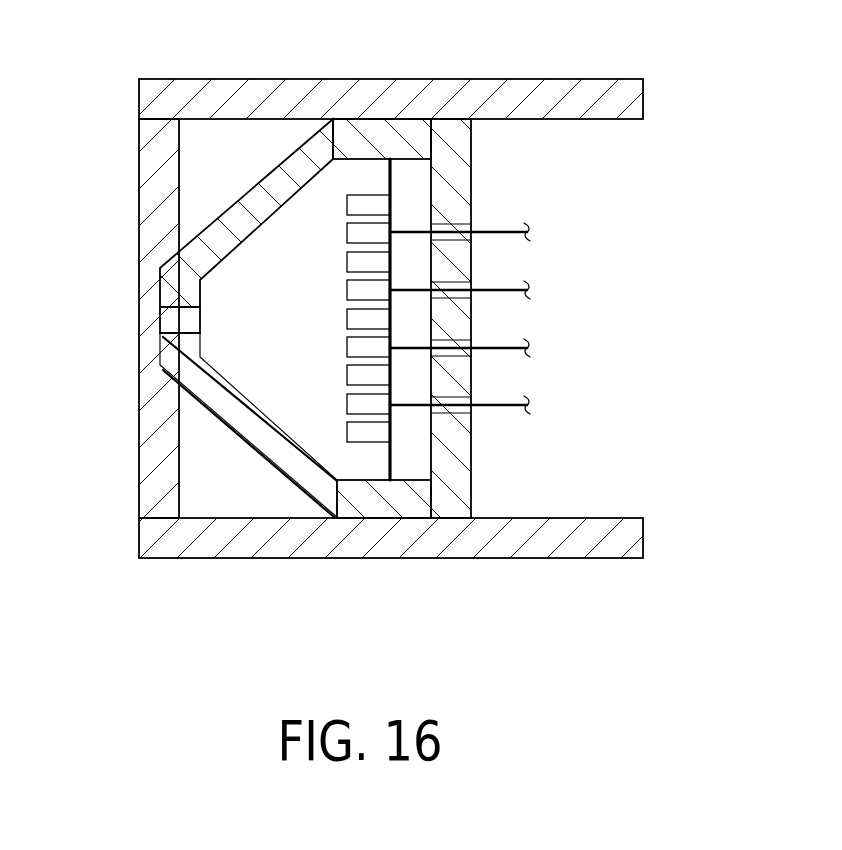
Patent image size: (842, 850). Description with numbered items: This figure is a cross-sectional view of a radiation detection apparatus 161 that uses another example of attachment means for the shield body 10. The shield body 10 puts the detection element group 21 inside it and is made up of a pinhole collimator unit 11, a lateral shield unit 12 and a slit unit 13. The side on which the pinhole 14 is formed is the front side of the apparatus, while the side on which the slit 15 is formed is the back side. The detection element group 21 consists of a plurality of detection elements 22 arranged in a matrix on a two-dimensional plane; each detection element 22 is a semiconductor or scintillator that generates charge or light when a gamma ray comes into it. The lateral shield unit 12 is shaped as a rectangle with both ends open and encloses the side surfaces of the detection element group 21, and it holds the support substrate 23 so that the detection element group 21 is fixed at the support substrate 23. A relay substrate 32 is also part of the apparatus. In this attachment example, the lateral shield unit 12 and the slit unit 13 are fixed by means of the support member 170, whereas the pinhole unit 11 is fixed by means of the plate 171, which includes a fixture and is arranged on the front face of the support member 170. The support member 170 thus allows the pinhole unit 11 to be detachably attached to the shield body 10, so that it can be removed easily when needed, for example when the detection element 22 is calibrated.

The shield body 10 is at (277, 487).
The pinhole collimator unit 11 is at (290, 153).
The lateral shield unit 12 is at (373, 128).
The slit unit 13 is at (445, 128).
The pinhole 14 is at (171, 327).
The slit 15 is at (472, 413).
The detection element group 21 is at (358, 443).
The detection element 22 is at (347, 440).
The support substrate 23 is at (395, 458).
The relay substrate 32 is at (490, 224).
The radiation detection apparatus 161 is at (470, 573).
The support member 170 is at (545, 558).
The plate 171 is at (138, 212).